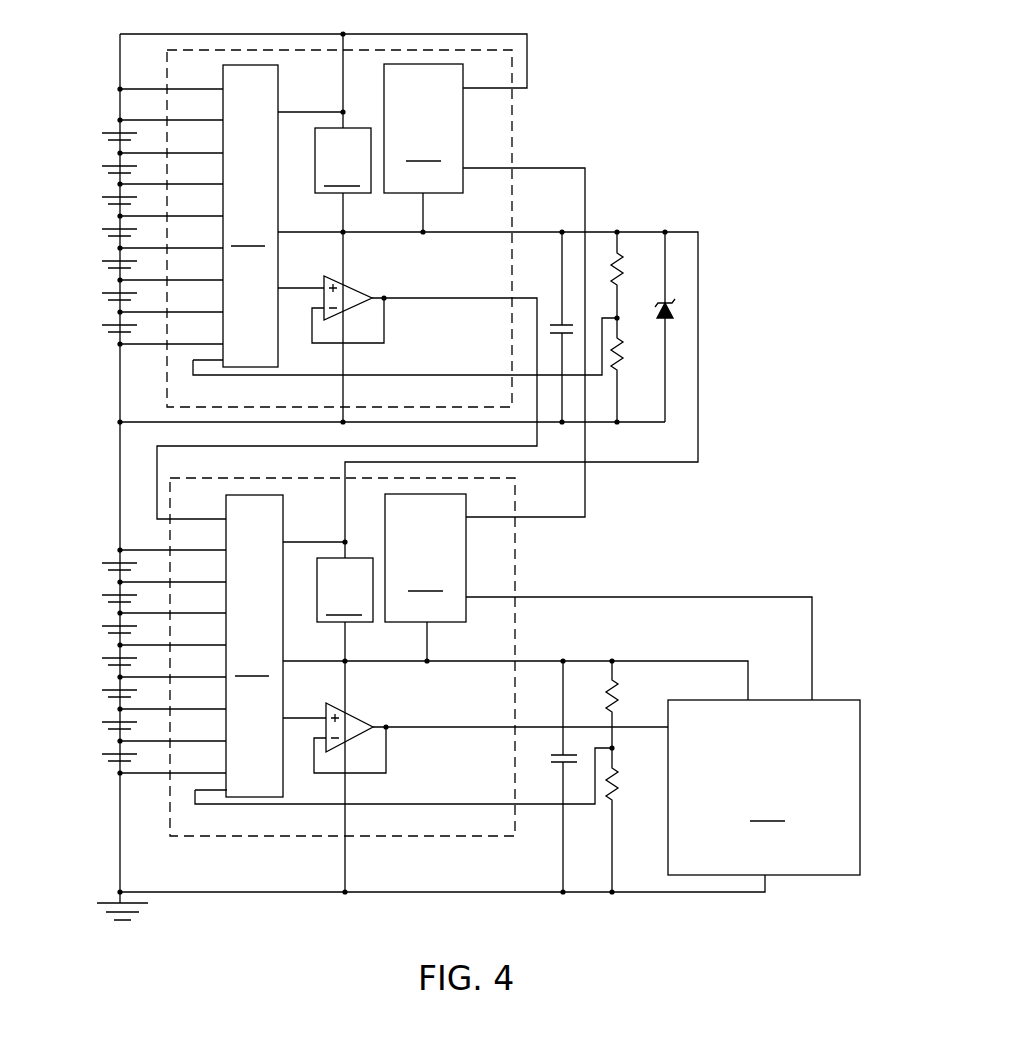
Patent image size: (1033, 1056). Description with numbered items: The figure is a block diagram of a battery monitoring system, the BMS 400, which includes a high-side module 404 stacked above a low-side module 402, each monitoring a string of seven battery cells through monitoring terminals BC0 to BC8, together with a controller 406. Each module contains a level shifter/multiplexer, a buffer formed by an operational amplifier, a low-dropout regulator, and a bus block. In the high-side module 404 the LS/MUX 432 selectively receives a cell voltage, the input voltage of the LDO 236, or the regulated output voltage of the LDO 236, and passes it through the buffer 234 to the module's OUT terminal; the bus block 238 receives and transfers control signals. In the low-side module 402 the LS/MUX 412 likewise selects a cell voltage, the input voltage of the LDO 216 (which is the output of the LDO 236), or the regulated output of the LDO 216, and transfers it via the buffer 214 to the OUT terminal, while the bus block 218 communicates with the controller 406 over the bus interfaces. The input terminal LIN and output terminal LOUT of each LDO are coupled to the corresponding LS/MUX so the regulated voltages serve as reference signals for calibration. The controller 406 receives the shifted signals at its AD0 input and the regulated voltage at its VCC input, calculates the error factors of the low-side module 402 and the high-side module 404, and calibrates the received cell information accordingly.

The BMS 400 is at (664, 108).
The low-side module 402 is at (380, 685).
The high-side module 404 is at (396, 236).
The controller 406 is at (764, 787).
The LS/MUX 412 is at (254, 646).
The LS/MUX 432 is at (250, 216).
The buffer 214 is at (350, 715).
The buffer 234 is at (348, 285).
The LDO 216 is at (345, 590).
The LDO 236 is at (343, 160).
The bus block 218 is at (425, 558).
The bus block 238 is at (423, 128).